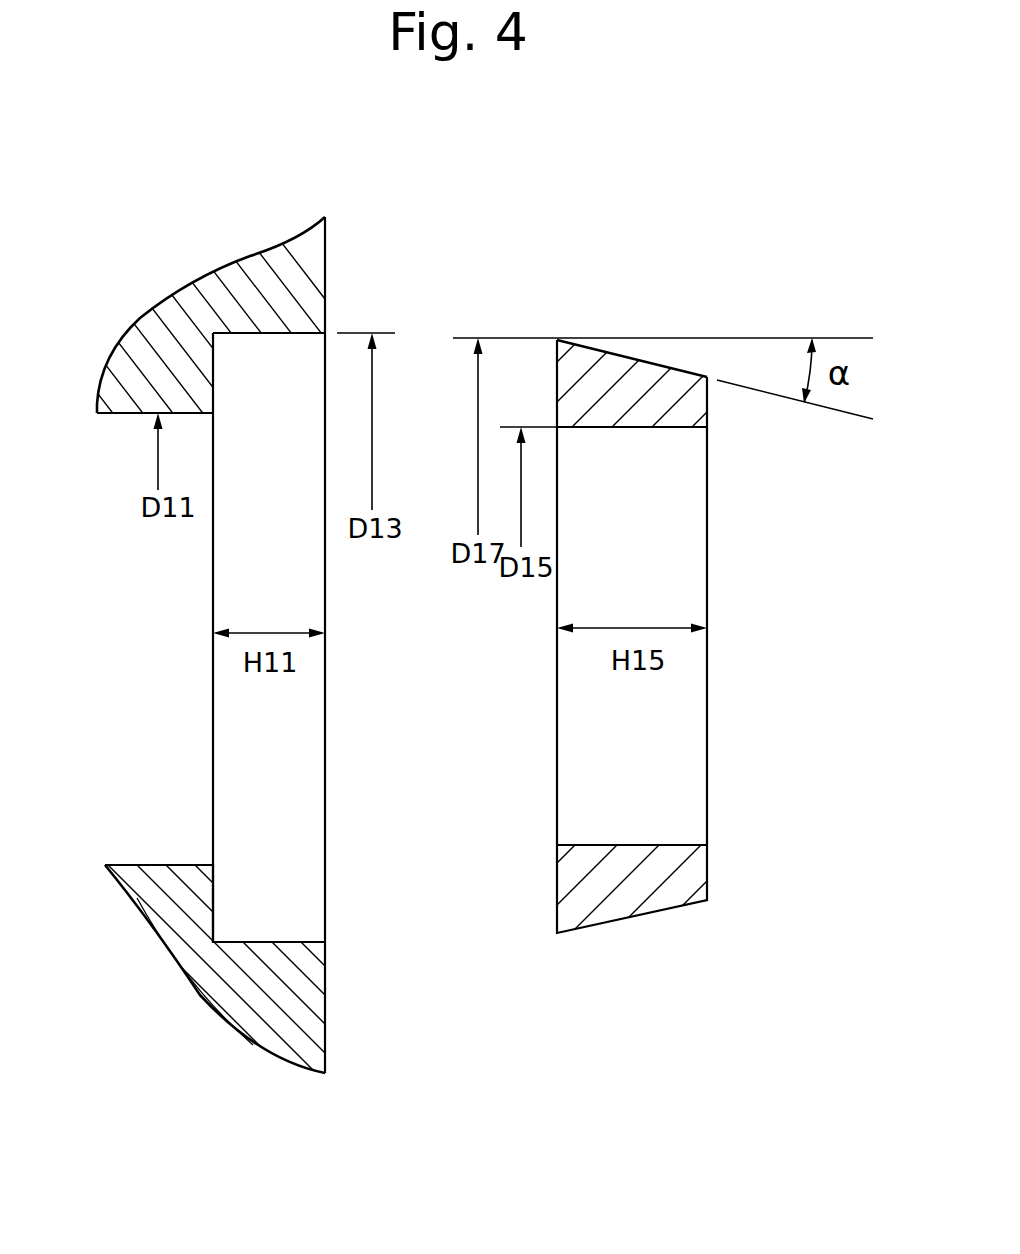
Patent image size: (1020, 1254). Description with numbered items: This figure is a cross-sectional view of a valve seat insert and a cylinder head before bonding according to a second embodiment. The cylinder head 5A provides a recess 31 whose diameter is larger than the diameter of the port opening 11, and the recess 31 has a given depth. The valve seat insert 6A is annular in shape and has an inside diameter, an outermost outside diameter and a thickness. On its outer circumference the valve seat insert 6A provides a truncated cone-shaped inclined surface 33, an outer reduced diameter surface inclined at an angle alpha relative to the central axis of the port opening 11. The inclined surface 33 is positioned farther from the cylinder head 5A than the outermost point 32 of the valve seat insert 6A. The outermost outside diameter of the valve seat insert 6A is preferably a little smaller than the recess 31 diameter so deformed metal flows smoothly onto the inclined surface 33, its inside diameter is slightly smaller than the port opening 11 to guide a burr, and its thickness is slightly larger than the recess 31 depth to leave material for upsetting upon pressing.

The cylinder head 5A is at (327, 1043).
The valve seat insert 6A is at (682, 911).
The port opening 11 is at (130, 415).
The recess 31 is at (263, 935).
The outermost point 32 is at (557, 338).
The inclined surface 33 is at (670, 363).